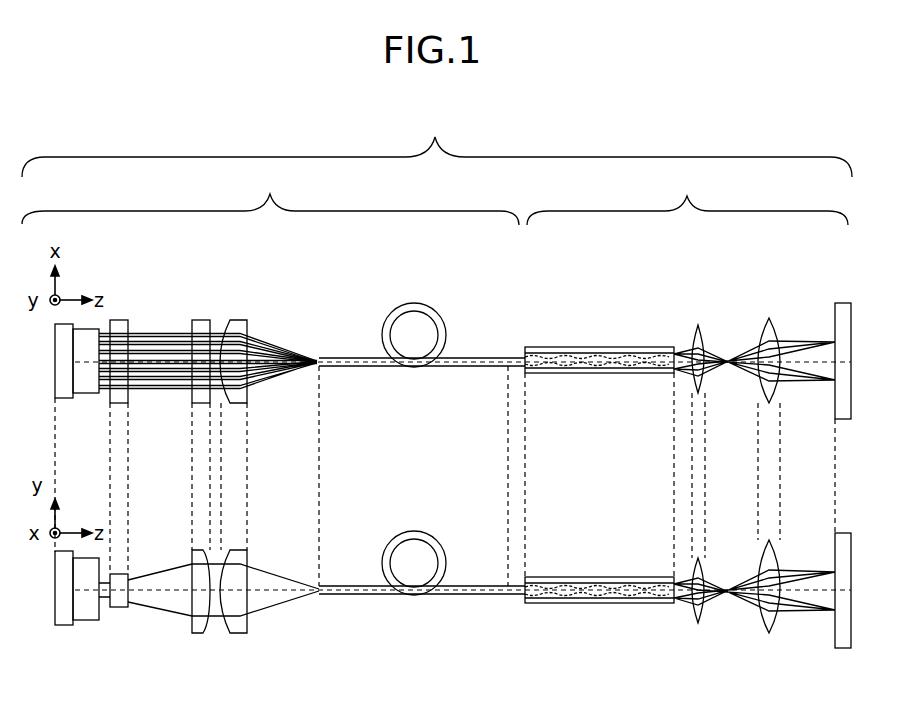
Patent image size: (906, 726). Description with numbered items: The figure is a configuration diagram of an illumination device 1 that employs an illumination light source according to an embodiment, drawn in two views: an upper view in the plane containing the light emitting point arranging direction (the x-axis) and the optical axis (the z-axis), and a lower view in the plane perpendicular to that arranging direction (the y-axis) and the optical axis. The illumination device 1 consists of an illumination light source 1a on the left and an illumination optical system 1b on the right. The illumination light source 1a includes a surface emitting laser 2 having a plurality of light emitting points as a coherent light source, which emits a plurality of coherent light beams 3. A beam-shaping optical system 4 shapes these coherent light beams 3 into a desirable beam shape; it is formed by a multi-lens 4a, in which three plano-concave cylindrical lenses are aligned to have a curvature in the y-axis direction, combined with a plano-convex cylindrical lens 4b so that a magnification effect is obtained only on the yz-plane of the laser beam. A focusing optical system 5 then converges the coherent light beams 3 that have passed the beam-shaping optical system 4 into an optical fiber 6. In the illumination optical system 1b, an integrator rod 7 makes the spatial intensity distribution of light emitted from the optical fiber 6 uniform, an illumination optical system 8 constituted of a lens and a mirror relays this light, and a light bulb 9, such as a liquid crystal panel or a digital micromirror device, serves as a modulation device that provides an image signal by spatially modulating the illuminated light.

The illumination device 1 is at (437, 143).
The illumination light source 1a is at (270, 197).
The illumination optical system 1b is at (687, 197).
The surface emitting laser 2 is at (80, 625).
The coherent light beams 3 is at (105, 393).
The beam-shaping optical system 4 is at (161, 509).
The multi-lens 4a is at (124, 607).
The plano-convex cylindrical lens 4b is at (190, 550).
The focusing optical system 5 is at (222, 641).
The optical fiber 6 is at (408, 594).
The integrator rod 7 is at (590, 603).
The illumination optical system 8 is at (788, 641).
The light bulb 9 is at (840, 648).